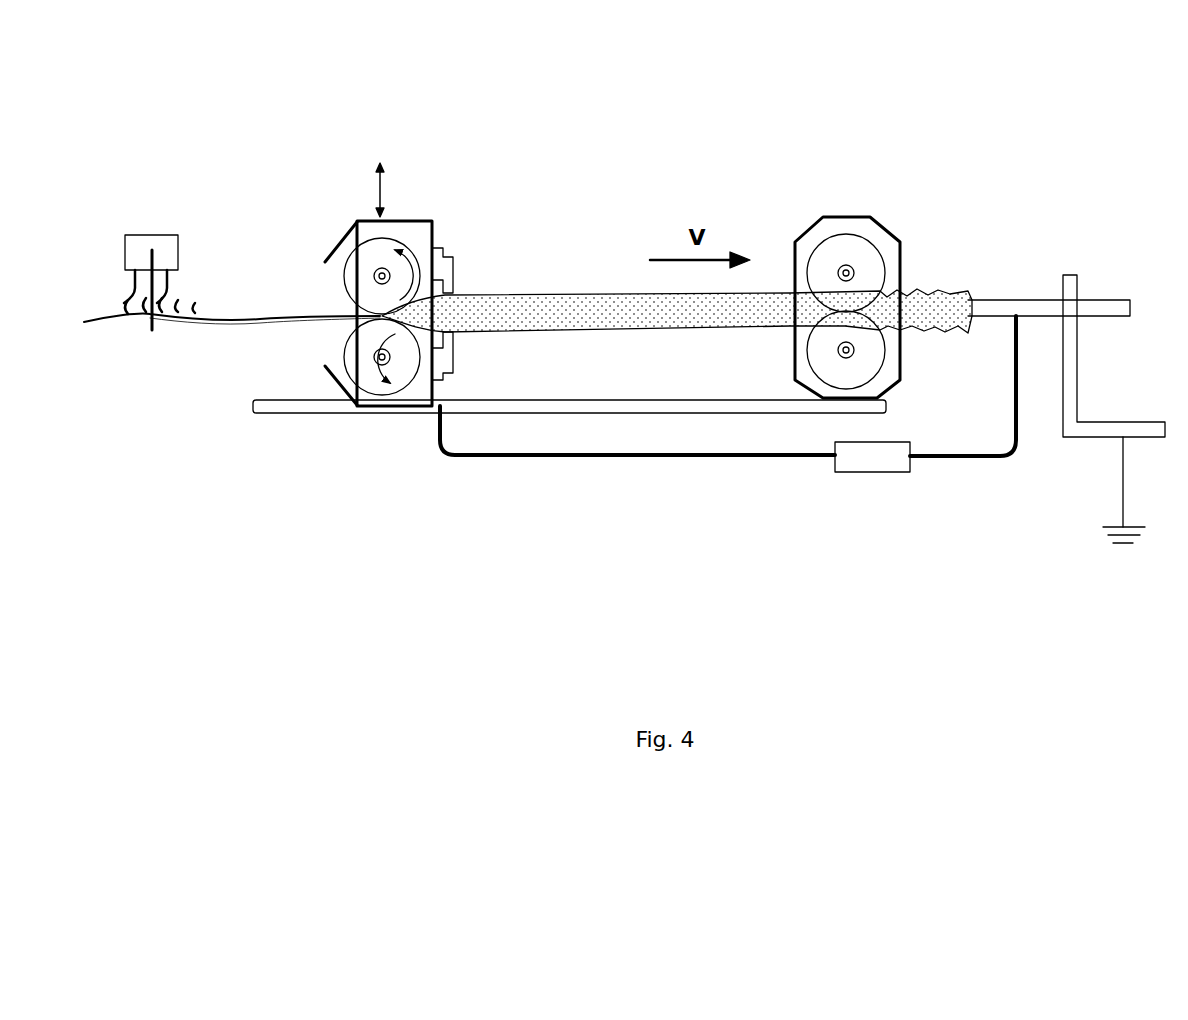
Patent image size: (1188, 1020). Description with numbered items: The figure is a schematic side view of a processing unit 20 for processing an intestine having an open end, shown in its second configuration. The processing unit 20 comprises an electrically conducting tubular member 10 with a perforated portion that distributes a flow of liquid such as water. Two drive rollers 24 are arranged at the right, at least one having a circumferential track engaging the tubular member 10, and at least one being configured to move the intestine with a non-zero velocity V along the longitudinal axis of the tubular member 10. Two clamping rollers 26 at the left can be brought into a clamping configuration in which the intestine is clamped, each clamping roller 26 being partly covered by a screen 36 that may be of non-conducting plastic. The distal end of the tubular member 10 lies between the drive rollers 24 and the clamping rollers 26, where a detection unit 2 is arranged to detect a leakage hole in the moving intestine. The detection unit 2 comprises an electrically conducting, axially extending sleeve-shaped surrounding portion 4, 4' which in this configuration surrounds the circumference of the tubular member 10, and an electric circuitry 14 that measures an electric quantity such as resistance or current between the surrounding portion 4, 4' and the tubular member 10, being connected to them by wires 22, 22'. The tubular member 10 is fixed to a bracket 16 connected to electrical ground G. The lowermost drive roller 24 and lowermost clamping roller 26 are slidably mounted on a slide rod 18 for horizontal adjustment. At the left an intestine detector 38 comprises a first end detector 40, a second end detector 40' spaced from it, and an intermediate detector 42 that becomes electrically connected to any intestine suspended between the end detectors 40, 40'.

The detection unit 2 is at (735, 518).
The surrounding portion 4 is at (486, 270).
The surrounding portion 4' is at (489, 356).
The tubular member 10 is at (590, 292).
The electric circuitry 14 is at (870, 473).
The bracket 16 is at (1070, 275).
The slide rod 18 is at (688, 400).
The processing unit 20 is at (382, 525).
The wire 22 is at (637, 475).
The wire 22' is at (963, 433).
The drive rollers 24 is at (887, 242).
The clamping rollers 26 is at (355, 222).
The screen 36 is at (418, 220).
The intestine detector 38 is at (157, 208).
The first end detector 40 is at (223, 340).
The second end detector 40' is at (200, 293).
The intermediate detector 42 is at (150, 332).
The electrical ground G is at (1088, 545).